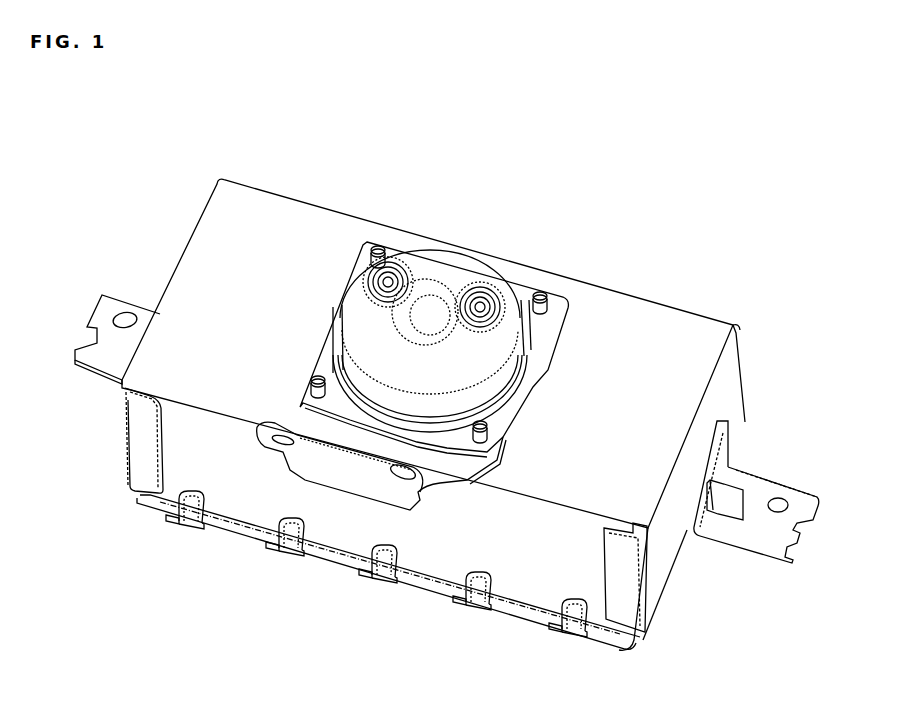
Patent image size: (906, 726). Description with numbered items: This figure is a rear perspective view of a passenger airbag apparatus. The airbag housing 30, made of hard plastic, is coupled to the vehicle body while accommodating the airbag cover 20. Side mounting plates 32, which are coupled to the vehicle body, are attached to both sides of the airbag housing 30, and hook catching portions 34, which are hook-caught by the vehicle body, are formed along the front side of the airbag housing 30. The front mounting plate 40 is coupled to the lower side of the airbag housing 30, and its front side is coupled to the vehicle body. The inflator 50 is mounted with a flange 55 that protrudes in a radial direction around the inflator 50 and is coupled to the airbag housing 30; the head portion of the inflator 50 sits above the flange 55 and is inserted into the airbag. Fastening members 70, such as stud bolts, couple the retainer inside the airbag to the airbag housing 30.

The airbag cover 20 is at (331, 558).
The airbag housing 30 is at (420, 547).
The side mounting plates 32 is at (110, 348).
The hook catching portions 34 is at (277, 553).
The front mounting plate 40 is at (460, 467).
The inflator 50 is at (453, 262).
The flange 55 is at (541, 372).
The fastening members 70 is at (378, 248).